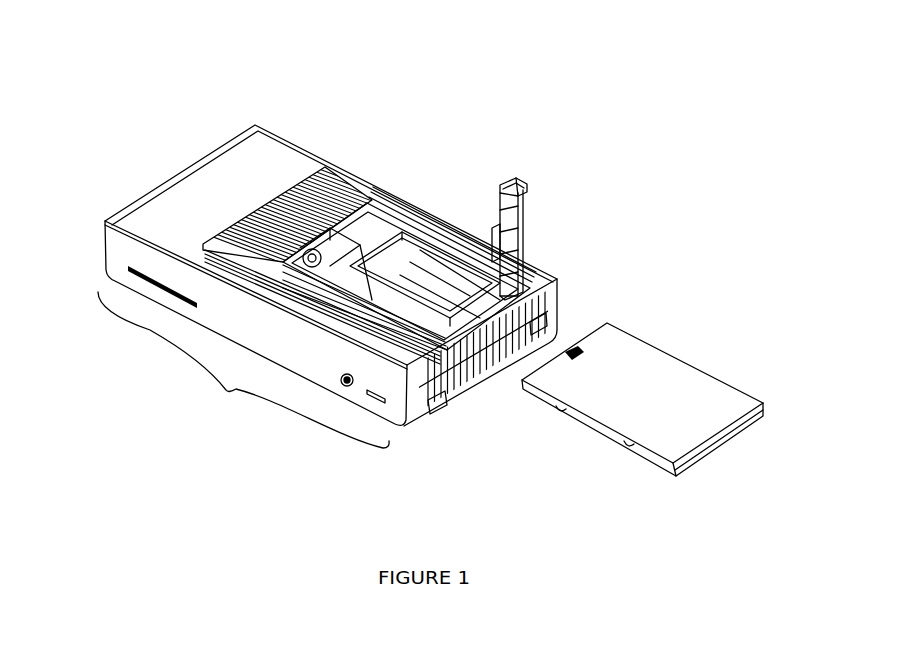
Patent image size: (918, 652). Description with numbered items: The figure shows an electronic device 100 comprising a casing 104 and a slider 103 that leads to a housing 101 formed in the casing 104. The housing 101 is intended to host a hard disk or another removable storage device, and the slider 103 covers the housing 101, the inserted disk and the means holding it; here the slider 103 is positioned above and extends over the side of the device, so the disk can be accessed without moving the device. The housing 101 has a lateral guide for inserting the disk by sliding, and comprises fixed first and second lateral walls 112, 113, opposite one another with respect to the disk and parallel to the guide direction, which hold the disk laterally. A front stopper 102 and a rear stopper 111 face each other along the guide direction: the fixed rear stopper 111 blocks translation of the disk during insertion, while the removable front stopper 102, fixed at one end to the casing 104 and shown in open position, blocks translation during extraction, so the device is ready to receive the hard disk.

The electronic device 100 is at (227, 397).
The housing 101 is at (391, 253).
The front stopper 102 is at (526, 236).
The slider 103 is at (641, 338).
The casing 104 is at (258, 143).
The rear stopper 111 is at (349, 212).
The first lateral wall 112 is at (467, 272).
The second lateral wall 113 is at (526, 193).